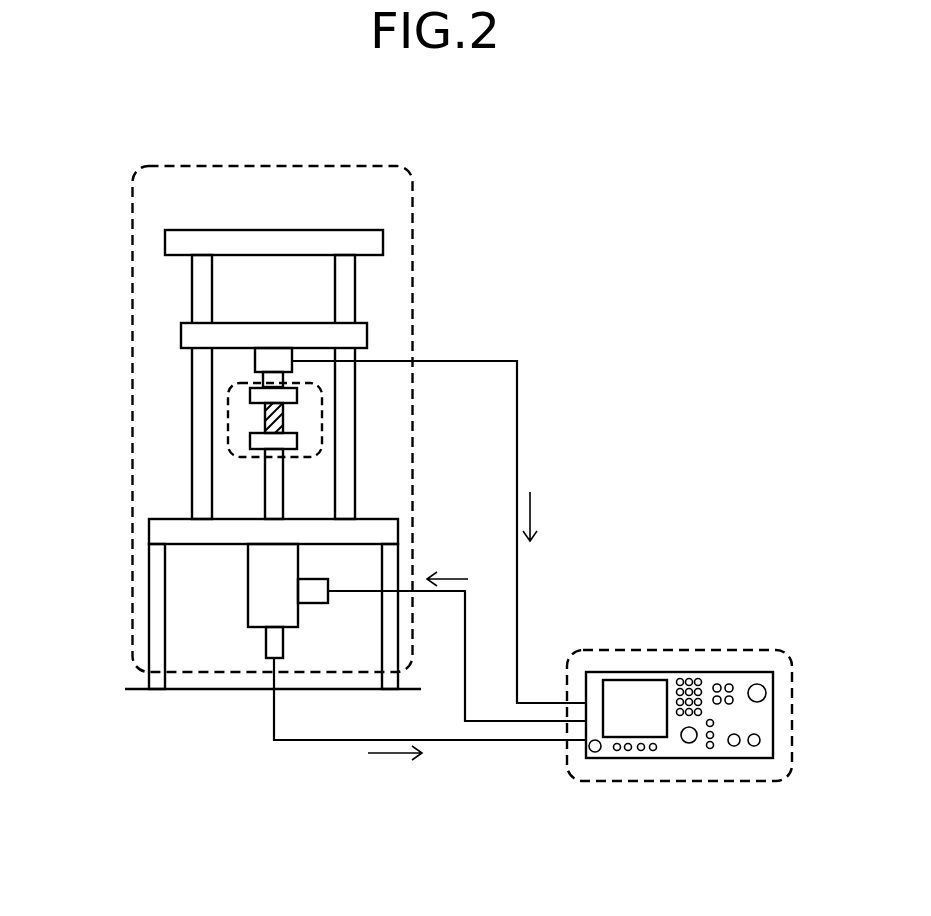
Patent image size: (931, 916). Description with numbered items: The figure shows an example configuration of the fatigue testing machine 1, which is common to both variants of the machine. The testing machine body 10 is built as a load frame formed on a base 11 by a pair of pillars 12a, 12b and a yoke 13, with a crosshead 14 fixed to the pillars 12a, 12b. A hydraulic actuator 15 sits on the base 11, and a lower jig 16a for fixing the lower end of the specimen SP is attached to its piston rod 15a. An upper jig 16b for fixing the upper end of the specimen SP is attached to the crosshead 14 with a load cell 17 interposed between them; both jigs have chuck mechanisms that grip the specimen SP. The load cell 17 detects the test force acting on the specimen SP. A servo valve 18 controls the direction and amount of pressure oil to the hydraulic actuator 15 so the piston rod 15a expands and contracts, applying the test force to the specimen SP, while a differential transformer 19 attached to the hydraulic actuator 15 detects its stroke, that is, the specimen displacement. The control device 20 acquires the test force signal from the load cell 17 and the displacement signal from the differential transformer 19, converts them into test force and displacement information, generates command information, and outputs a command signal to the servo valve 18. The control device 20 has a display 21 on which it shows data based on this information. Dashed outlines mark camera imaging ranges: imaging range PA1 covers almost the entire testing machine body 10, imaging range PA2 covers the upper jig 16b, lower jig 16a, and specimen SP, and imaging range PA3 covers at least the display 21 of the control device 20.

The fatigue testing machine 1 is at (614, 260).
The testing machine body 10 is at (361, 221).
The base 11 is at (149, 530).
The pillar 12a is at (192, 502).
The pillar 12b is at (355, 497).
The yoke 13 is at (165, 241).
The crosshead 14 is at (181, 335).
The hydraulic actuator 15 is at (248, 585).
The piston rod 15a is at (265, 475).
The lower jig 16a is at (297, 440).
The upper jig 16b is at (297, 393).
The load cell 17 is at (255, 362).
The servo valve 18 is at (315, 604).
The differential transformer 19 is at (266, 643).
The control device 20 is at (680, 673).
The display 21 is at (622, 692).
The specimen SP is at (265, 417).
The imaging range PA1 is at (412, 251).
The imaging range PA2 is at (315, 383).
The imaging range PA3 is at (723, 643).